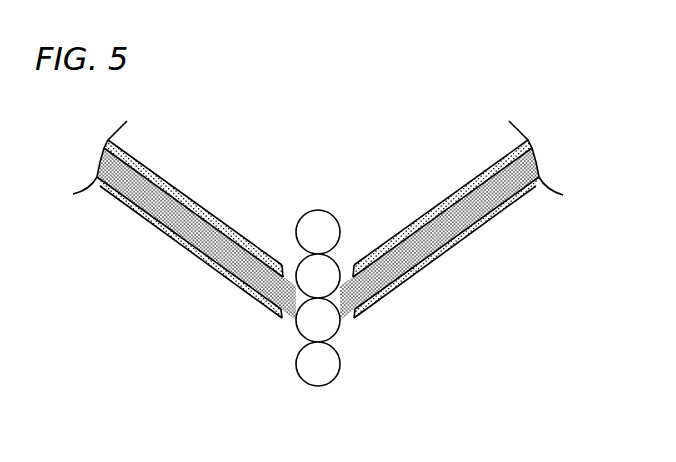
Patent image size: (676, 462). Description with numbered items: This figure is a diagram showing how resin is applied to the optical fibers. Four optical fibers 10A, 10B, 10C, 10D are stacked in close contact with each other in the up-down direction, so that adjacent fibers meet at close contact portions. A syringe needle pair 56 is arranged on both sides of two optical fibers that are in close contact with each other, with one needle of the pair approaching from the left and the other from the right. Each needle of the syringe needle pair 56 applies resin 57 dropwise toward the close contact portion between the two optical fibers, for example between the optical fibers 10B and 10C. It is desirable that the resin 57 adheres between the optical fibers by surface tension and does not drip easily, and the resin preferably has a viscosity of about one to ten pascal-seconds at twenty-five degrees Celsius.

The optical fiber 10A is at (324, 211).
The optical fiber 10B is at (297, 268).
The optical fiber 10C is at (333, 335).
The optical fiber 10D is at (336, 376).
The syringe needle pair 56 is at (160, 230).
The resin 57 is at (290, 327).